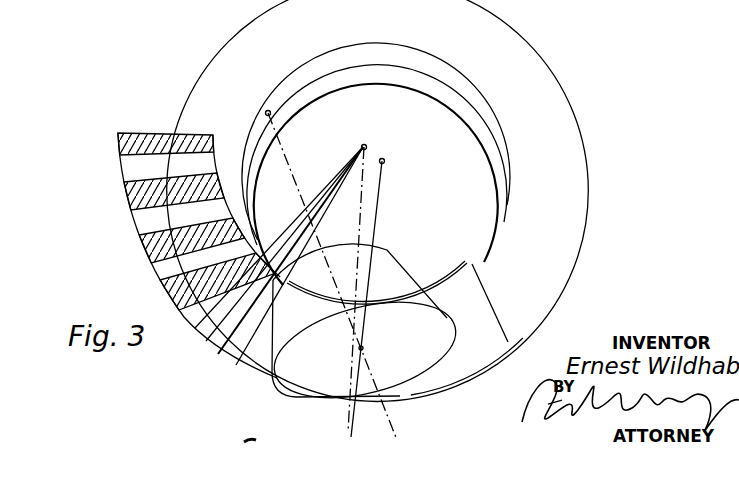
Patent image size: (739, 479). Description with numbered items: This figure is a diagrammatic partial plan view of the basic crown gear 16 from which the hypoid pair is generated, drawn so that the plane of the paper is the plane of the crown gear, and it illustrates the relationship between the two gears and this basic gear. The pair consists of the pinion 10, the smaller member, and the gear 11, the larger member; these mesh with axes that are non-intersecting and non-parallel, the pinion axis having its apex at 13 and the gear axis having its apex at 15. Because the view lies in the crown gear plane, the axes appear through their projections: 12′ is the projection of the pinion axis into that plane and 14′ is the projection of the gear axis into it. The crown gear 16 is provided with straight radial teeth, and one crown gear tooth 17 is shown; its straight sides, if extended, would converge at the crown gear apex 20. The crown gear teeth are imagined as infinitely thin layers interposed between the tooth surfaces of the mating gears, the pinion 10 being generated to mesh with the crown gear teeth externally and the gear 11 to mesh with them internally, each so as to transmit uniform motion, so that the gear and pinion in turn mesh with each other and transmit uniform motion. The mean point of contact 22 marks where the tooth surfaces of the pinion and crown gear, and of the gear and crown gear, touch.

The pinion 10 is at (396, 268).
The gear 11 is at (566, 263).
The projection of the pinion axis 12′ is at (297, 190).
The apex of the pinion axis 13 is at (265, 112).
The projection of the gear axis 14′ is at (376, 227).
The apex of the gear axis 15 is at (385, 161).
The crown gear 16 is at (137, 221).
The crown gear tooth 17 is at (212, 341).
The crown gear apex 20 is at (367, 146).
The mean point of contact 22 is at (364, 348).